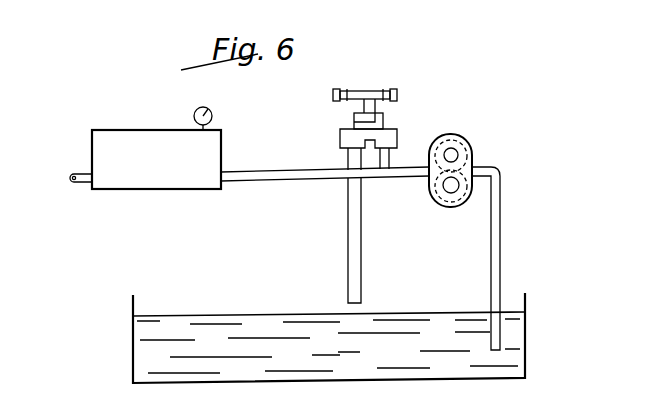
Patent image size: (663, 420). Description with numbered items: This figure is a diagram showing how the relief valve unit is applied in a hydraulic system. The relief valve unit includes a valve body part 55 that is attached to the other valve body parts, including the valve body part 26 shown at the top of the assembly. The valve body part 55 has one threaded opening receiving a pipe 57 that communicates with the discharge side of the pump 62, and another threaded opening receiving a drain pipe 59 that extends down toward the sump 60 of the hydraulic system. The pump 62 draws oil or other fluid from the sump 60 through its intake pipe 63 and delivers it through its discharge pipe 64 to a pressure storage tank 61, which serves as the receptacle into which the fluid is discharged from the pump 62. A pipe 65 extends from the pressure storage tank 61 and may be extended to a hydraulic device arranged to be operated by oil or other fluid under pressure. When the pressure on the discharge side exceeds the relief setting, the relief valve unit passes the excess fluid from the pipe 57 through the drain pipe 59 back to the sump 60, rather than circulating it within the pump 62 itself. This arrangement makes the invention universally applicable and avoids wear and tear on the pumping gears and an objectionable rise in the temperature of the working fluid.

The valve body part 26 is at (396, 108).
The valve body part 55 is at (340, 136).
The pipe 57 is at (390, 158).
The drain pipe 59 is at (362, 221).
The sump 60 is at (512, 330).
The pressure storage tank 61 is at (168, 175).
The pump 62 is at (472, 147).
The intake pipe 63 is at (506, 258).
The discharge pipe 64 is at (289, 181).
The pipe 65 is at (84, 183).